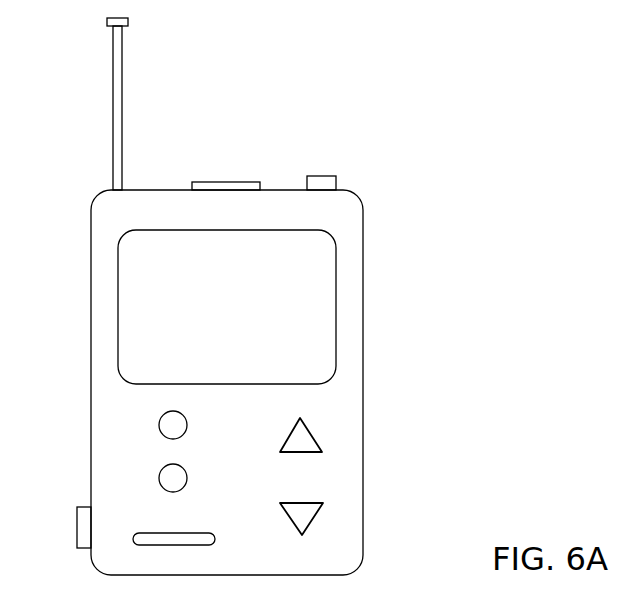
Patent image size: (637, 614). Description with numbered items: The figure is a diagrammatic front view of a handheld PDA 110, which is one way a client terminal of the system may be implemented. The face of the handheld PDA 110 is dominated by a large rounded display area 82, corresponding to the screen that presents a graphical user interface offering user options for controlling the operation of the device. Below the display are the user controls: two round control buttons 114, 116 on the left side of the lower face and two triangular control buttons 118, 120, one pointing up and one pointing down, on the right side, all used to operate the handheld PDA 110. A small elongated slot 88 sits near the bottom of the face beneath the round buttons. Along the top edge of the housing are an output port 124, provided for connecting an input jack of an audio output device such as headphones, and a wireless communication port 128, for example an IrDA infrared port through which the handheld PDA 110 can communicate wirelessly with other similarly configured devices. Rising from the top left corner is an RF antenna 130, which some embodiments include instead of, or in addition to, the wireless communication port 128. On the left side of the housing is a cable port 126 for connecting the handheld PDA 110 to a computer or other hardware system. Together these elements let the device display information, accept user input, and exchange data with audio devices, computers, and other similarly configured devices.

The handheld PDA 110 is at (487, 221).
The display screen 82 is at (241, 319).
The RF antenna 130 is at (122, 108).
The wireless communication port 128 is at (227, 182).
The output port 124 is at (320, 176).
The cable port 126 is at (77, 527).
The control button 114 is at (161, 417).
The control button 116 is at (187, 477).
The control button 118 is at (290, 435).
The control button 120 is at (295, 500).
The slot button 88 is at (215, 534).